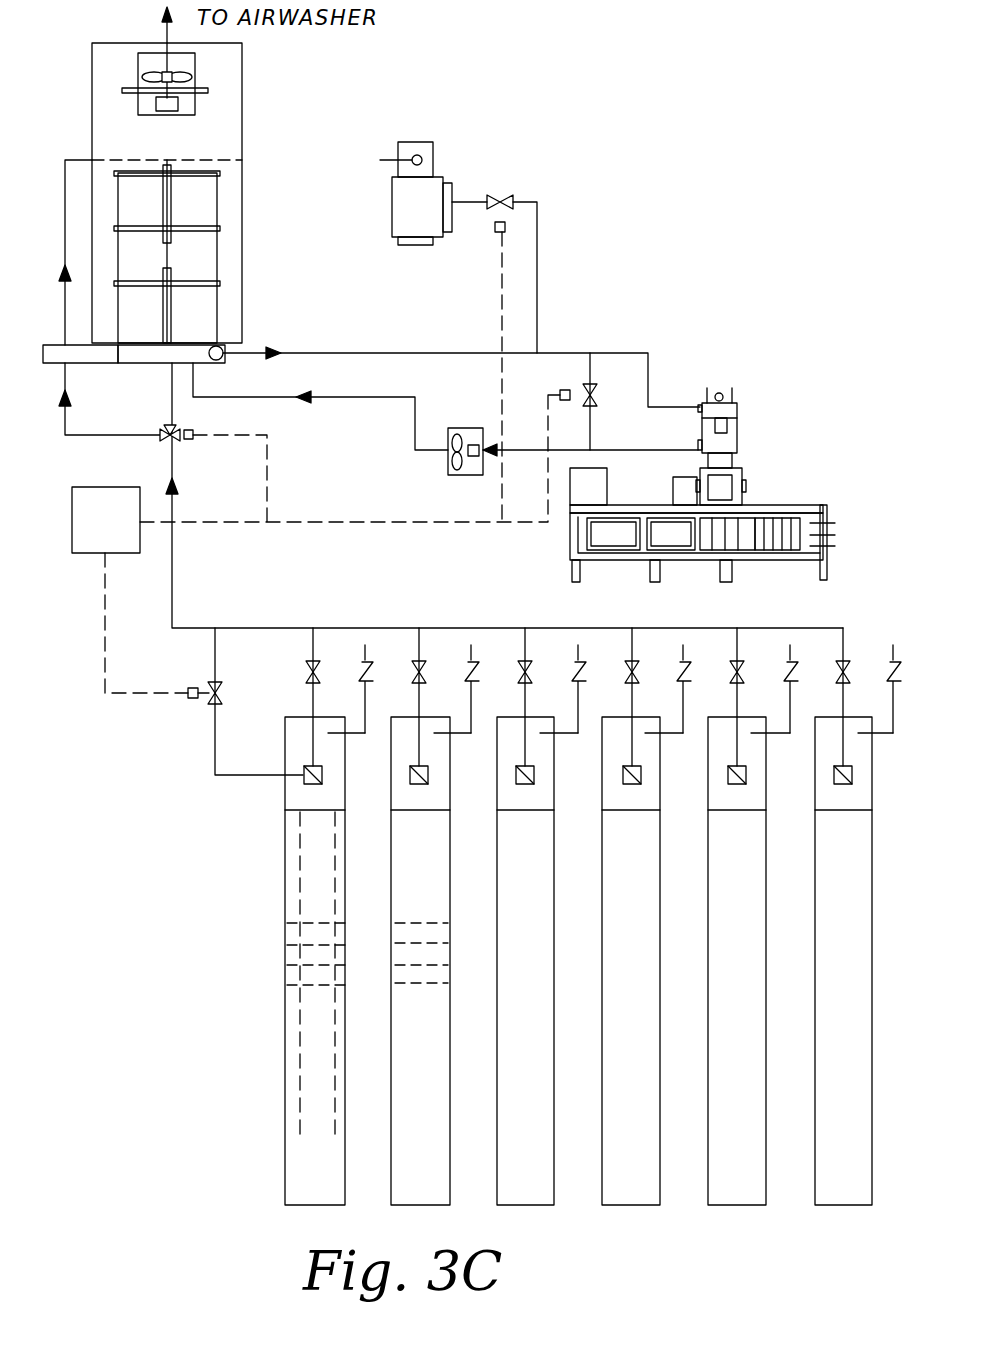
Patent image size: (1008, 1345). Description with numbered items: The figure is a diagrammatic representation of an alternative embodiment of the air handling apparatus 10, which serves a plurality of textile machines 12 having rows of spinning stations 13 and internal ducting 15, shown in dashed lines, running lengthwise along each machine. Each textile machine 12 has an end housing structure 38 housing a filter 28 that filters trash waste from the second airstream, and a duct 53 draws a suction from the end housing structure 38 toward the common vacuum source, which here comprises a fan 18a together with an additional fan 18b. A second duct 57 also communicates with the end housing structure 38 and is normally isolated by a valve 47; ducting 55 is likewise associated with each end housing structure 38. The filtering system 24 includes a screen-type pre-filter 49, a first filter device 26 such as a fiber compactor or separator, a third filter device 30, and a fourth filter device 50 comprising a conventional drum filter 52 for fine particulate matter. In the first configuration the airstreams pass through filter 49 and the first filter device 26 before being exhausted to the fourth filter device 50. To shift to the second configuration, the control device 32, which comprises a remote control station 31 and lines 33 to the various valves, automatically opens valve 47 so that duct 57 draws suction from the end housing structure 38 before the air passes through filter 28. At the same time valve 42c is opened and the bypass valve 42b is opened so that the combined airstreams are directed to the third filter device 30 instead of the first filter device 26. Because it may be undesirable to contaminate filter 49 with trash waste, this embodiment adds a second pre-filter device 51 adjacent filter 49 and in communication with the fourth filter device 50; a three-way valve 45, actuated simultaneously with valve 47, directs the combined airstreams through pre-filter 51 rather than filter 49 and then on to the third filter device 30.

The air handling apparatus 10 is at (217, 926).
The textile machine 12 is at (287, 1075).
The spinning station 13 is at (435, 940).
The internal ducting 15 is at (297, 1016).
The fan 18a is at (178, 111).
The additional fan 18b is at (460, 475).
The filtering system 24 is at (624, 250).
The first filter device 26 is at (737, 420).
The filter 28 is at (315, 784).
The third filter device 30 is at (433, 160).
The remote control station 31 is at (90, 487).
The control device 32 is at (91, 580).
The lines or connections 33 is at (300, 522).
The end housing structure 38 is at (345, 778).
The bypass valve 42b is at (622, 390).
The valve 42c is at (507, 196).
The three-way valve 45 is at (176, 441).
The valve 47 is at (222, 690).
The filter 49 is at (160, 363).
The fourth filter device 50 is at (242, 70).
The second pre-filter device 51 is at (88, 363).
The drum filter 52 is at (217, 202).
The duct 53 is at (313, 690).
The ducting 55 is at (473, 707).
The second duct 57 is at (215, 758).